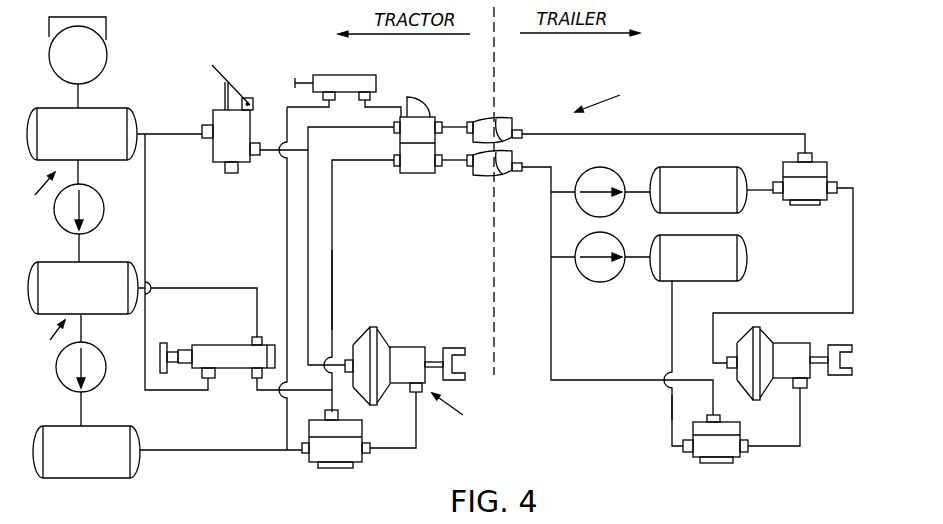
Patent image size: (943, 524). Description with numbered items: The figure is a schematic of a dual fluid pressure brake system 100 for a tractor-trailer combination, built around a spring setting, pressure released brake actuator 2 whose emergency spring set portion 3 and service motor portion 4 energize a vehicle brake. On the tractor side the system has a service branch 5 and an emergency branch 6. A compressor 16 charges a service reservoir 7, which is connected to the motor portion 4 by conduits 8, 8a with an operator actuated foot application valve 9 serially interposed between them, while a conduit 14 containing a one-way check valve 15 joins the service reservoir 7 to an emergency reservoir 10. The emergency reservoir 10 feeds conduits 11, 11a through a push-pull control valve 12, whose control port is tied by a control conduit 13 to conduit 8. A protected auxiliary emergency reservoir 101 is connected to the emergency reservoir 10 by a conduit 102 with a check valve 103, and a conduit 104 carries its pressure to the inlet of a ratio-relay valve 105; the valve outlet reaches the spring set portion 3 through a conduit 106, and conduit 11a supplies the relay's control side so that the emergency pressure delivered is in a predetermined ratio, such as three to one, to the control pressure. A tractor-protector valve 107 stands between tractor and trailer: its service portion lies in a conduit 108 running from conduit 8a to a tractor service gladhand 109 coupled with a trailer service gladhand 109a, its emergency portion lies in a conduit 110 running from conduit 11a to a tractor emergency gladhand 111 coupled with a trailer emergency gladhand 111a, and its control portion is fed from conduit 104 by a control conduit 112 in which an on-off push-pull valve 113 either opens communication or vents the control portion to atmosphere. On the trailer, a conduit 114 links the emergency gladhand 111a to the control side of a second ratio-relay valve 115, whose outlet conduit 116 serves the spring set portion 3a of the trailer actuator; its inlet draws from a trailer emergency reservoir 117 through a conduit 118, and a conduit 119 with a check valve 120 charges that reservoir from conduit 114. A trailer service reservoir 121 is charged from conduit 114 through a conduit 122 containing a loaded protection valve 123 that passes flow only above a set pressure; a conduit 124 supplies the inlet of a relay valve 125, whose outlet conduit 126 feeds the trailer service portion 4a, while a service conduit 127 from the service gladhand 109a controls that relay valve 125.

The brake actuator 2 is at (488, 431).
The spring set portion 3 is at (412, 376).
The spring set portion of trailer brake actuator 3a is at (803, 374).
The fluid pressure responsive motor portion 4 is at (380, 340).
The service portion of trailer brake actuator 4a is at (767, 343).
The service branch 5 is at (37, 216).
The emergency branch 6 is at (42, 376).
The service reservoir 7 is at (110, 108).
The conduit 8 is at (178, 133).
The conduit 8a is at (308, 250).
The foot application valve 9 is at (236, 146).
The emergency reservoir 10 is at (102, 316).
The conduit 11 is at (187, 288).
The conduit 11a is at (273, 404).
The push-pull control valve 12 is at (229, 326).
The control conduit 13 is at (145, 210).
The conduit 14 is at (82, 175).
The check valve 15 is at (104, 218).
The compressor 16 is at (106, 40).
The fluid pressure system 100 is at (630, 88).
The auxiliary emergency reservoir 101 is at (97, 478).
The conduit 102 is at (81, 410).
The check valve 103 is at (98, 385).
The conduit 104 is at (188, 452).
The ratio-relay valve 105 is at (313, 468).
The conduit 106 is at (397, 450).
The tractor-protector valve 107 is at (420, 100).
The conduit 108 is at (328, 128).
The tractor service gladhand 109 is at (498, 118).
The trailer service gladhand 109a is at (515, 140).
The conduit 110 is at (333, 288).
The tractor emergency gladhand 111 is at (505, 177).
The trailer emergency gladhand 111a is at (470, 180).
The control conduit 112 is at (287, 223).
The push-pull valve 113 is at (350, 75).
The conduit 114 is at (553, 369).
The ratio-relay valve 115 is at (700, 458).
The conduit 116 is at (777, 448).
The trailer emergency reservoir 117 is at (696, 282).
The conduit 118 is at (673, 398).
The conduit 119 is at (640, 260).
The check valve 120 is at (580, 285).
The trailer service reservoir 121 is at (683, 176).
The conduit 122 is at (635, 198).
The protection valve 123 is at (615, 176).
The conduit 124 is at (760, 190).
The relay valve 125 is at (823, 160).
The conduit 126 is at (851, 237).
The service conduit 127 is at (660, 134).